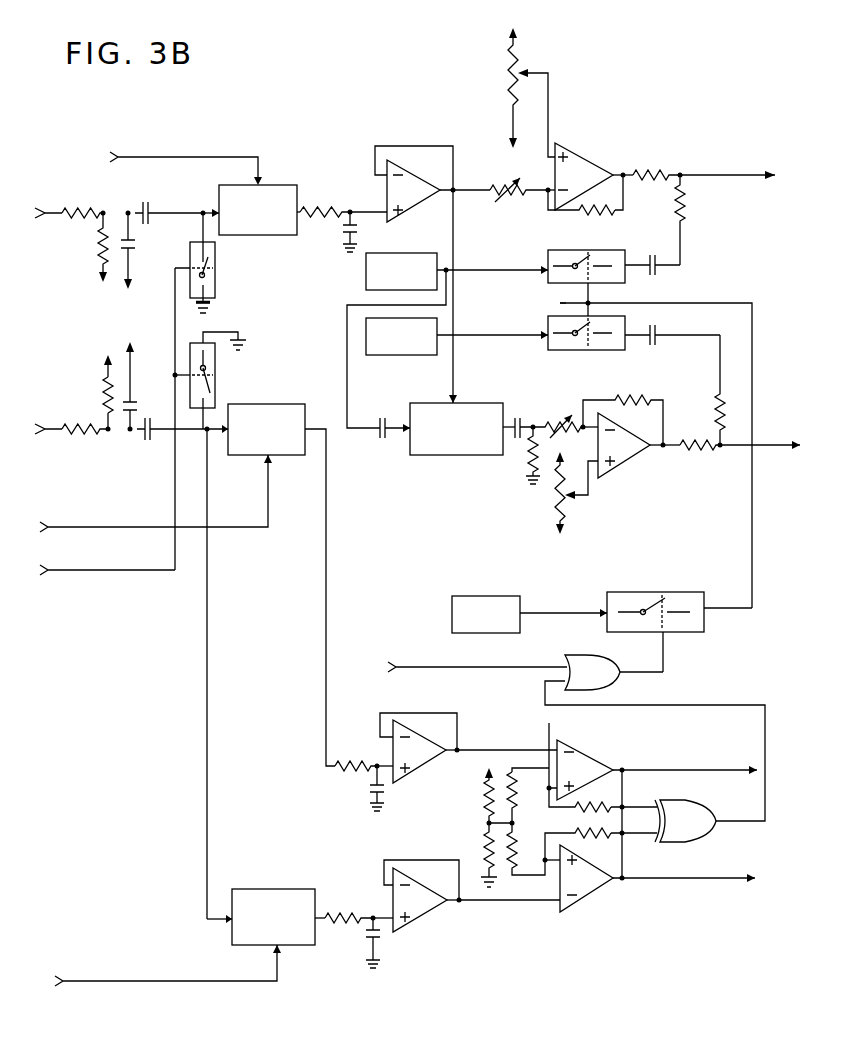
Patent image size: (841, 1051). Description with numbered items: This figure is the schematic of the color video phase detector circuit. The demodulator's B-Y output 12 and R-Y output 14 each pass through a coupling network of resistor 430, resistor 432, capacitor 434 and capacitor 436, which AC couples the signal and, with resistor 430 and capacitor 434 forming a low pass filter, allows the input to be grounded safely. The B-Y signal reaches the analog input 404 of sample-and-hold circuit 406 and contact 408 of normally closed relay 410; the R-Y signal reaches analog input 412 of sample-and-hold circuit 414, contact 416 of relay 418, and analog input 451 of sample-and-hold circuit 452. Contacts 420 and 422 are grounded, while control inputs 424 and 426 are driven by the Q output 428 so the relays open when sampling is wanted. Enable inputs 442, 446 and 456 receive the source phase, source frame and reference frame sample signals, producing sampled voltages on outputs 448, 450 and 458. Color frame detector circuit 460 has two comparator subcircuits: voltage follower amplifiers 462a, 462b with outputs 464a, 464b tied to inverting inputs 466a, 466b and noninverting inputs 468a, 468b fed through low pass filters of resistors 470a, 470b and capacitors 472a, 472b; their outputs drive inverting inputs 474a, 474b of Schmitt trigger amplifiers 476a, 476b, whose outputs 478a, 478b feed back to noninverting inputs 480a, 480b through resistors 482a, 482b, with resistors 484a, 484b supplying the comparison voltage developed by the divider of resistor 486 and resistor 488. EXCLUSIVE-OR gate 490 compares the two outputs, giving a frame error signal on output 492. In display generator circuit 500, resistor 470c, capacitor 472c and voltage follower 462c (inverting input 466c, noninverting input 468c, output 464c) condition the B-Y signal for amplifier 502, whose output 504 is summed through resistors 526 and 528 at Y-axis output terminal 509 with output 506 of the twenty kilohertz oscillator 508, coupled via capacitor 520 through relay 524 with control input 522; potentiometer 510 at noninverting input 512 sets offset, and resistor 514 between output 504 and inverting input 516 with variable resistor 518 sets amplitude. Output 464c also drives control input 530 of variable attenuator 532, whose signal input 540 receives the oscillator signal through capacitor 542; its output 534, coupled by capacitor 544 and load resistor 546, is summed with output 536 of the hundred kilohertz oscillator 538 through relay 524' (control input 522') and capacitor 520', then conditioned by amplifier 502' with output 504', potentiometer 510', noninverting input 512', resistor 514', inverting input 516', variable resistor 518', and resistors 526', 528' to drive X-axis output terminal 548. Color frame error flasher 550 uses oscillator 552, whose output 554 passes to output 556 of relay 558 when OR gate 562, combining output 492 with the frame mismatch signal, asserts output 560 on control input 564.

The B-Y output 12 is at (50, 206).
The R-Y output 14 is at (51, 416).
The Q output 428 is at (85, 572).
The resistor 430 is at (80, 208).
The resistor 432 is at (99, 252).
The capacitor 434 is at (128, 210).
The capacitor 436 is at (147, 200).
The analog input 404 is at (205, 210).
The sample-and-hold circuit 406 is at (240, 237).
The electrical contact 408 is at (201, 210).
The electronic relay 410 is at (216, 275).
The analog input 412 is at (208, 440).
The sample-and-hold circuit 414 is at (243, 456).
The electrical contact 416 is at (214, 400).
The electronic relay 418 is at (222, 352).
The electrical contact 420 is at (216, 302).
The electrical contact 422 is at (222, 330).
The control input 424 is at (174, 266).
The control input 426 is at (173, 372).
The enable input 442 is at (259, 178).
The enable input 446 is at (269, 480).
The output 448 is at (303, 208).
The output 450 is at (312, 427).
The analog input 451 is at (205, 919).
The sample-and-hold circuit 452 is at (265, 889).
The enable input 456 is at (277, 968).
The output 458 is at (327, 915).
The color frame detector circuit 460 is at (611, 948).
The operational amplifier 462a is at (440, 798).
The operational amplifier 462b is at (410, 867).
The voltage follower amplifier 462c is at (410, 158).
The output 464a is at (458, 748).
The output 464b is at (456, 902).
The output 464c is at (455, 188).
The inverting input 466a is at (378, 737).
The inverting input 466b is at (383, 885).
The inverting input 466c is at (373, 175).
The noninverting input 468a is at (388, 764).
The noninverting input 468b is at (385, 925).
The noninverting input 468c is at (386, 214).
The resistor 470a is at (340, 768).
The resistor 470b is at (343, 925).
The resistor 470c is at (320, 218).
The capacitor 472a is at (371, 803).
The capacitor 472b is at (380, 963).
The capacitor 472c is at (352, 222).
The inverting input 474a is at (549, 726).
The inverting input 474b is at (552, 866).
The operational amplifier 476a is at (582, 744).
The operational amplifier 476b is at (590, 897).
The output 478a is at (618, 767).
The output 478b is at (625, 881).
The noninverting input 480a is at (550, 749).
The noninverting input 480b is at (515, 899).
The resistor 482a is at (621, 795).
The resistor 482b is at (590, 838).
The resistor 484a is at (526, 789).
The resistor 484b is at (518, 848).
The resistor 486 is at (485, 850).
The resistor 488 is at (485, 795).
The EXCLUSIVE-OR gate 490 is at (698, 800).
The output 492 is at (725, 830).
The display generator circuit 500 is at (398, 489).
The operational amplifier 502 is at (584, 164).
The operational amplifier 502' is at (630, 444).
The output 504 is at (625, 158).
The output 504' is at (660, 466).
The output 506 is at (447, 268).
The sine wave oscillator 508 is at (401, 253).
The Y-axis output terminal 509 is at (752, 180).
The potentiometer 510 is at (494, 85).
The potentiometer 510' is at (537, 496).
The noninverting input 512 is at (548, 113).
The noninverting input 512' is at (596, 485).
The resistor 514 is at (606, 195).
The resistor 514' is at (623, 402).
The inverting input 516 is at (527, 203).
The inverting input 516' is at (585, 447).
The variable resistor 518 is at (500, 197).
The variable resistor 518' is at (568, 409).
The capacitor 520 is at (652, 250).
The capacitor 520' is at (672, 353).
The control input 522 is at (656, 445).
The control input 522' is at (543, 306).
The electronic relay 524 is at (580, 255).
The relay 524' is at (586, 349).
The resistor 526 is at (656, 154).
The resistor 526' is at (702, 466).
The resistor 528 is at (703, 220).
The resistor 528' is at (698, 390).
The control input 530 is at (452, 388).
The variable attenuator 532 is at (453, 456).
The output 534 is at (507, 425).
The output 536 is at (447, 336).
The oscillator 538 is at (362, 345).
The signal input 540 is at (383, 440).
The capacitor 542 is at (372, 427).
The capacitor 544 is at (521, 422).
The load resistor 546 is at (528, 452).
The X-axis output terminal 548 is at (775, 448).
The color frame error flasher 550 is at (421, 675).
The oscillator 552 is at (470, 596).
The output 554 is at (545, 612).
The output 556 is at (710, 608).
The relay 558 is at (635, 592).
The output 560 is at (628, 676).
The OR gate 562 is at (572, 656).
The control input 564 is at (668, 640).